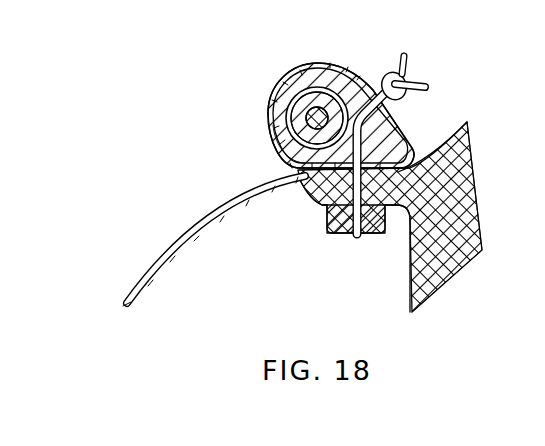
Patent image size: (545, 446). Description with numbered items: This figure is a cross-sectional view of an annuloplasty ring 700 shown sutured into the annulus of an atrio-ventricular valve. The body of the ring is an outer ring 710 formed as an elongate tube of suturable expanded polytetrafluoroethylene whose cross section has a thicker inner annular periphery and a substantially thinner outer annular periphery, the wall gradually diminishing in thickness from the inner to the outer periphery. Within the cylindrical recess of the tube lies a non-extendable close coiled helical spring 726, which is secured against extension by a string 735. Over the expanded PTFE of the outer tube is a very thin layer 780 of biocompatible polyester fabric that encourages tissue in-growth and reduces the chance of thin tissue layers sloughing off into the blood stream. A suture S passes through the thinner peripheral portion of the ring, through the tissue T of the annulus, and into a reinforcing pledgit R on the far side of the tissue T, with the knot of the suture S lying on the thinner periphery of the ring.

The annuloplasty ring 700 is at (288, 99).
The outer ring 710 is at (320, 74).
The layer of biocompatible fabric 780 is at (333, 68).
The string 735 is at (271, 148).
The close coiled helical spring 726 is at (288, 125).
The suture S is at (410, 76).
The tissue T is at (313, 207).
The reinforcing pledgit R is at (337, 232).